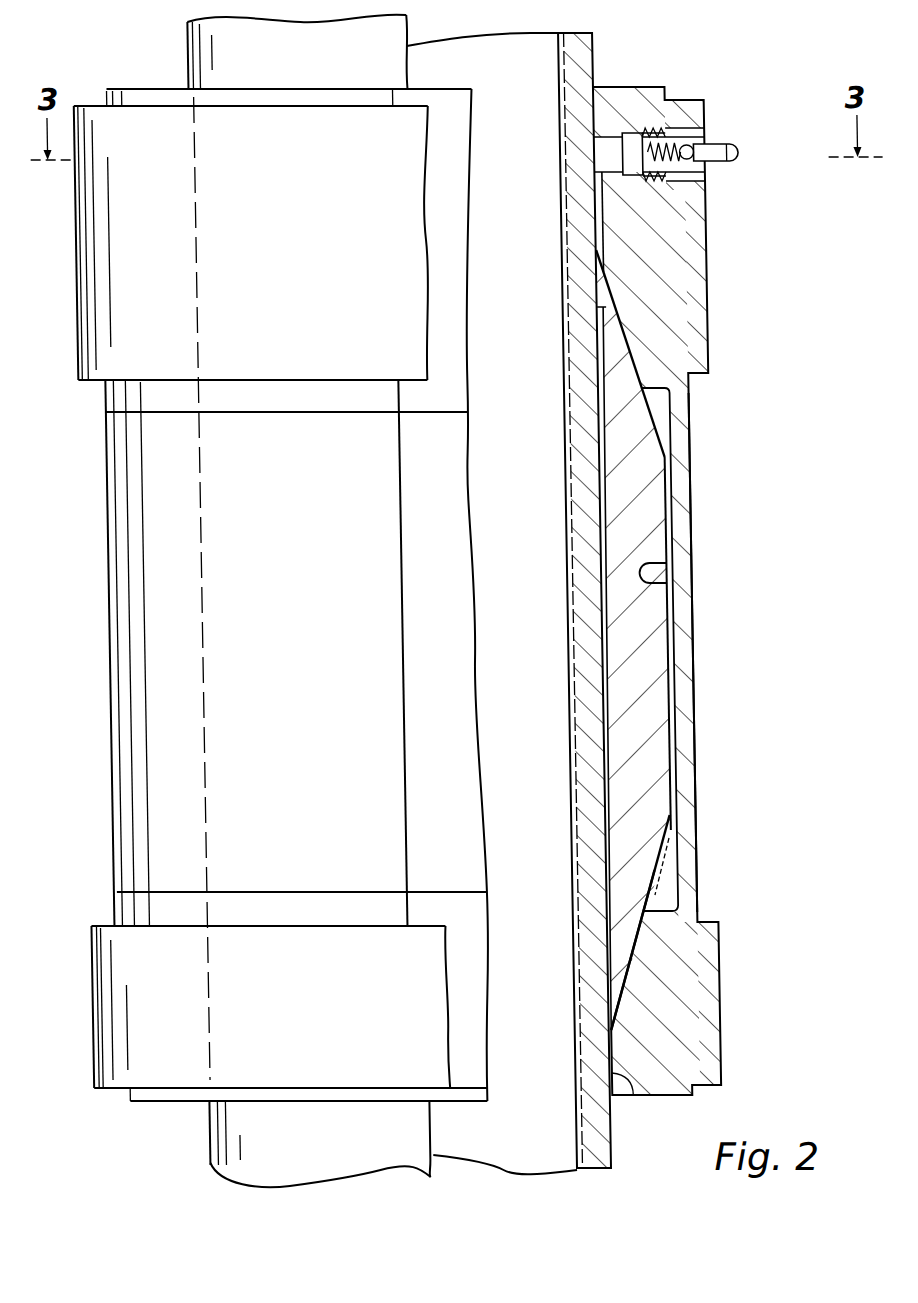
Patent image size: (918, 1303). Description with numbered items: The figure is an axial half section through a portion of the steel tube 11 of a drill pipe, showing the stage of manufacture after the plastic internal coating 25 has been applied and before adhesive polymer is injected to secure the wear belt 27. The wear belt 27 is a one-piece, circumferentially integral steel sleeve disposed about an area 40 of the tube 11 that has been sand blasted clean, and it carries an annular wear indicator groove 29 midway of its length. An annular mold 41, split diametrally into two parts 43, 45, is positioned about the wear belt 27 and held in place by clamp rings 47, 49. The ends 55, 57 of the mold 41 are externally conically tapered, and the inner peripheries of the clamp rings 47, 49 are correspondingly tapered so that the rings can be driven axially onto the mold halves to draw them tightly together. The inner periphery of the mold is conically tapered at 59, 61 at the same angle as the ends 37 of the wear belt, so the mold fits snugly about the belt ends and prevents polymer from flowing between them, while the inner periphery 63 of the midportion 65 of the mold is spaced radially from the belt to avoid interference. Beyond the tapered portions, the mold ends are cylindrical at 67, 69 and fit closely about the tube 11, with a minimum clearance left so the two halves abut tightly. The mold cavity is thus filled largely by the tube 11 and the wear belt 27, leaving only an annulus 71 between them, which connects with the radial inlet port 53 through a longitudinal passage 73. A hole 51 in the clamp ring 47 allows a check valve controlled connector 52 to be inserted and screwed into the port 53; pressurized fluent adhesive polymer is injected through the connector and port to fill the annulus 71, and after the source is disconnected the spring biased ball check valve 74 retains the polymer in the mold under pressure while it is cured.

The tube 11 is at (581, 525).
The internal coating 25 is at (558, 437).
The wear belt 27 is at (634, 520).
The annular wear indicator groove 29 is at (645, 573).
The ends of the wear belt 37 is at (625, 433).
The area of tube 40 is at (186, 619).
The annular mold 41 is at (96, 728).
The mold part 43 is at (350, 630).
The mold part 45 is at (439, 630).
The clamp ring 47 is at (320, 240).
The clamp ring 49 is at (746, 992).
The hole 51 is at (701, 123).
The check valve controlled connector 52 is at (705, 135).
The radial inlet port 53 is at (621, 133).
The mold end 55 is at (273, 97).
The mold end 57 is at (305, 915).
The tapered inner periphery portion 59 is at (614, 358).
The tapered inner periphery portion 61 is at (614, 951).
The inner periphery of midportion 63 is at (661, 626).
The midportion of the mold 65 is at (672, 688).
The cylindrical inner periphery 67 is at (596, 98).
The cylindrical inner periphery 69 is at (614, 1097).
The annulus 71 is at (588, 485).
The longitudinal passage 73 is at (594, 220).
The spring biased ball check valve 74 is at (704, 162).